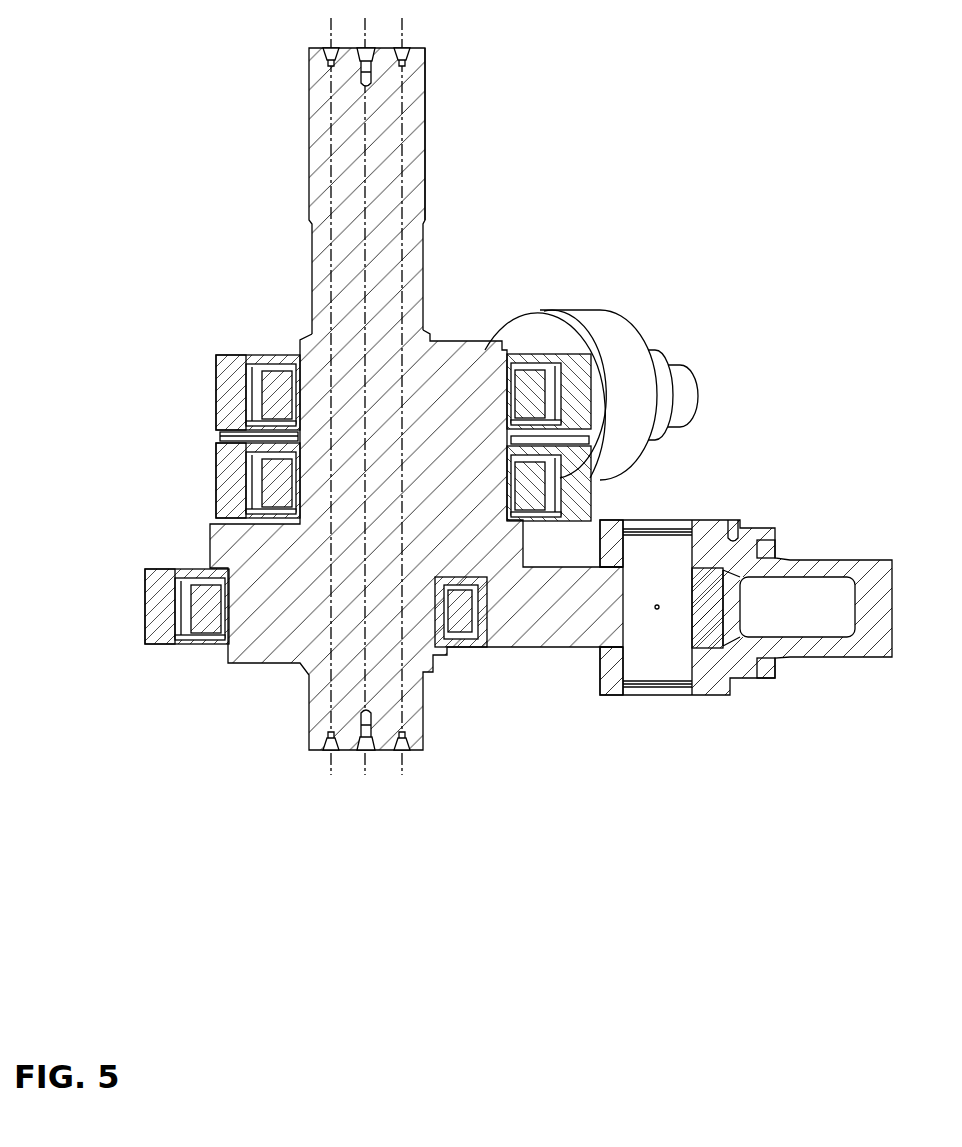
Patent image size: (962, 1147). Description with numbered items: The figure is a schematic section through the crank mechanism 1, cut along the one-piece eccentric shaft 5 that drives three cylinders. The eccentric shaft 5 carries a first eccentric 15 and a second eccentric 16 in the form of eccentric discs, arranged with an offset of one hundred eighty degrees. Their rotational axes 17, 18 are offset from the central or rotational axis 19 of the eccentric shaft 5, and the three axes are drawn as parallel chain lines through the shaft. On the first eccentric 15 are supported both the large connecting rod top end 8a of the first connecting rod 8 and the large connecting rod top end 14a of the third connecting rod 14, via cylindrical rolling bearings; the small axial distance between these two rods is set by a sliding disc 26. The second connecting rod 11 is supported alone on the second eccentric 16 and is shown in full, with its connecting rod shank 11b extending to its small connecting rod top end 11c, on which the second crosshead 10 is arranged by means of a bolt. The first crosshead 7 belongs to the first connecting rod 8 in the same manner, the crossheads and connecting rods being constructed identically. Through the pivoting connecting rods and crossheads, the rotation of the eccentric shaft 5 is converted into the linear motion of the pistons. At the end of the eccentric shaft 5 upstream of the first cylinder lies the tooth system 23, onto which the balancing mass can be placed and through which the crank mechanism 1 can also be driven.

The crank mechanism 1 is at (210, 174).
The eccentric shaft 5 is at (415, 255).
The first crosshead 7 is at (590, 316).
The first connecting rod 8 is at (203, 342).
The large connecting rod top end 8a is at (237, 365).
The second crosshead 10 is at (704, 525).
The second connecting rod 11 is at (138, 607).
The connecting rod shank 11b is at (155, 582).
The small connecting rod top end 11c is at (690, 640).
The third connecting rod 14 is at (195, 473).
The large connecting rod top end 14a is at (233, 462).
The first eccentric 15 is at (485, 354).
The second eccentric 16 is at (258, 648).
The rotational axis of the first eccentric 17 is at (403, 35).
The rotational axis of the second eccentric 18 is at (330, 24).
The central axis 19 is at (365, 760).
The tooth system 23 is at (425, 100).
The sliding disc 26 is at (285, 430).